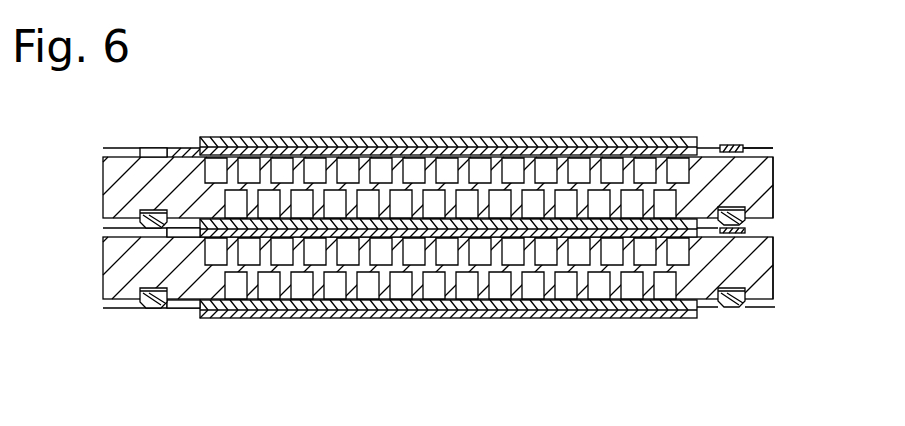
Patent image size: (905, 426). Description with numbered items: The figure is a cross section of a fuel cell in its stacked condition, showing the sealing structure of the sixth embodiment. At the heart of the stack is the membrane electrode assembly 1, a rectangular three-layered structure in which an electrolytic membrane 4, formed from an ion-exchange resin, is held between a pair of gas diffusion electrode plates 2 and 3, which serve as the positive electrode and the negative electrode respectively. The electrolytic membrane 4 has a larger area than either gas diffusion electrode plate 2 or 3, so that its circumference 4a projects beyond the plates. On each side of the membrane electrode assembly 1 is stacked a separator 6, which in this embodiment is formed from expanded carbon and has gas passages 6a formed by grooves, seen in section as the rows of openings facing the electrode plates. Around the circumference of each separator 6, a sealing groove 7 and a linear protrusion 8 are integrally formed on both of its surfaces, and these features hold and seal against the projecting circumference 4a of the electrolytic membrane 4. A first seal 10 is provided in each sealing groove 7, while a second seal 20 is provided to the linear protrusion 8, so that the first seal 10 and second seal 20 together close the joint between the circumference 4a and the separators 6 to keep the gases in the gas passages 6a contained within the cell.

The membrane electrode assembly 1 is at (217, 138).
The gas diffusion electrode plate 2 is at (267, 147).
The gas diffusion electrode plate 3 is at (310, 152).
The electrolytic membrane 4 is at (345, 155).
The circumference 4a is at (133, 213).
The separator 6 is at (190, 150).
The gas passages 6a is at (632, 193).
The sealing groove 7 is at (775, 175).
The linear protrusion 8 is at (745, 148).
The first seal 10 is at (745, 216).
The second seal 20 is at (733, 145).